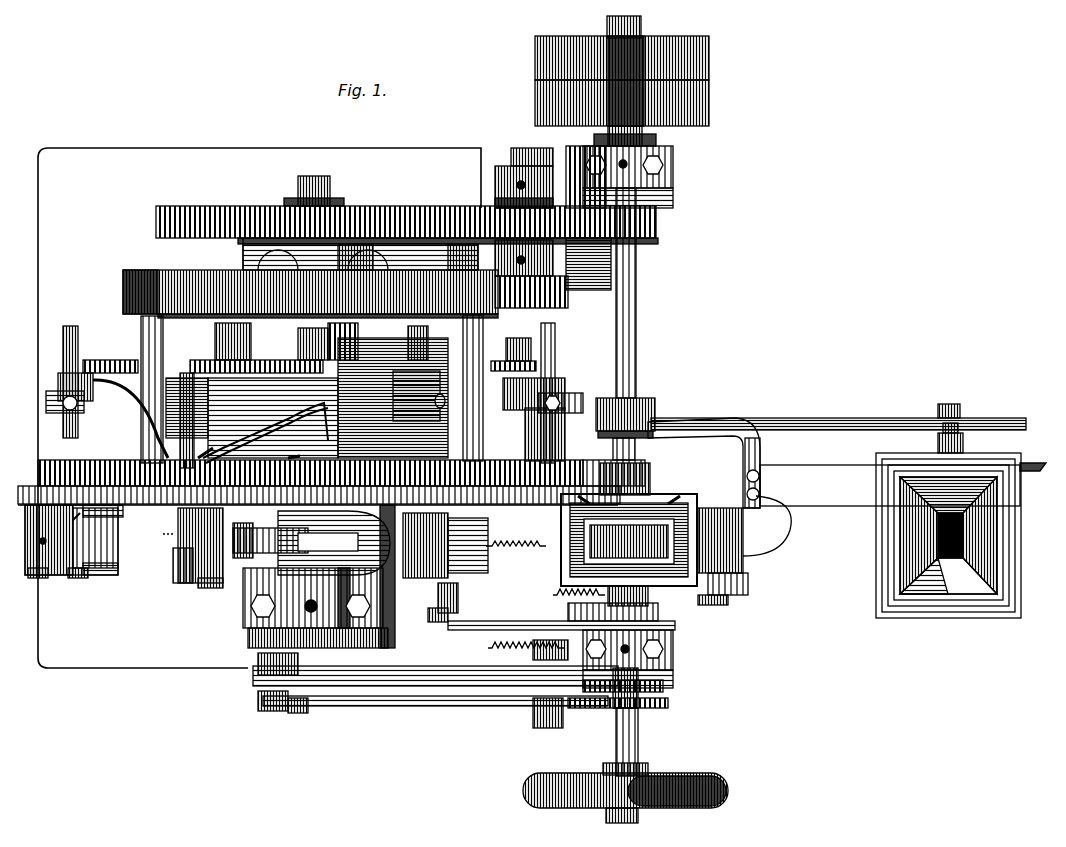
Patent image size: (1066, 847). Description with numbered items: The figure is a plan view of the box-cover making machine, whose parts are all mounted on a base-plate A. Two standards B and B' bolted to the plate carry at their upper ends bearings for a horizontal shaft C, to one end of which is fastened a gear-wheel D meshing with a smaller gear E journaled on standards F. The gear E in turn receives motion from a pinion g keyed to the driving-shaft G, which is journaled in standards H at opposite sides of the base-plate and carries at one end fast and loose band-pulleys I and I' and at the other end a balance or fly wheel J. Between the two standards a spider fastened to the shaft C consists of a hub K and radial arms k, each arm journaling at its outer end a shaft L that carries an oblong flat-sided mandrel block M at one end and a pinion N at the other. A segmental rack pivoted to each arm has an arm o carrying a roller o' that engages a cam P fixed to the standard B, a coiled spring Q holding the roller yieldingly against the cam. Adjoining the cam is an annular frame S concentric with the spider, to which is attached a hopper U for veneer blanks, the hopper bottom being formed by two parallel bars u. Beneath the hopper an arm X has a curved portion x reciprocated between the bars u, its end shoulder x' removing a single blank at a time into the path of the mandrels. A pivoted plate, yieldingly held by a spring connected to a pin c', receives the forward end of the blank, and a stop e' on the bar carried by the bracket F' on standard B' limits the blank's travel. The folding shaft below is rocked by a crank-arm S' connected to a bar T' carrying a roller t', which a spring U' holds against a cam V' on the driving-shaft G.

The base-plate A is at (259, 408).
The loose band-pulley I' is at (639, 48).
The fast band-pulley I is at (637, 91).
The standard H is at (665, 160).
The pinion g is at (648, 222).
The standard F is at (523, 197).
The gear E is at (487, 190).
The horizontal shaft C is at (306, 168).
The gear-wheel D is at (345, 212).
The bracket F' is at (553, 273).
The standard B is at (345, 254).
The cam P is at (310, 294).
The pinion N is at (556, 342).
The shaft L is at (50, 378).
The hub K is at (259, 420).
The roller o' is at (307, 325).
The coiled spring Q is at (370, 330).
The arm o is at (349, 338).
The radial arm k is at (455, 350).
The driving-shaft G is at (583, 482).
The annular frame S is at (327, 470).
The curved portion x is at (467, 537).
The mandrel block M is at (92, 567).
The standard B' is at (301, 621).
The stop e' is at (425, 545).
The pin c' is at (468, 545).
The crank-arm S' is at (434, 598).
The bar T' is at (561, 614).
The roller t' is at (490, 611).
The spring U' is at (508, 684).
The hopper U is at (630, 515).
The bar u is at (629, 536).
The shoulder x' is at (647, 537).
The cam V' is at (634, 605).
The arm X is at (720, 587).
The fly-wheel J is at (555, 782).